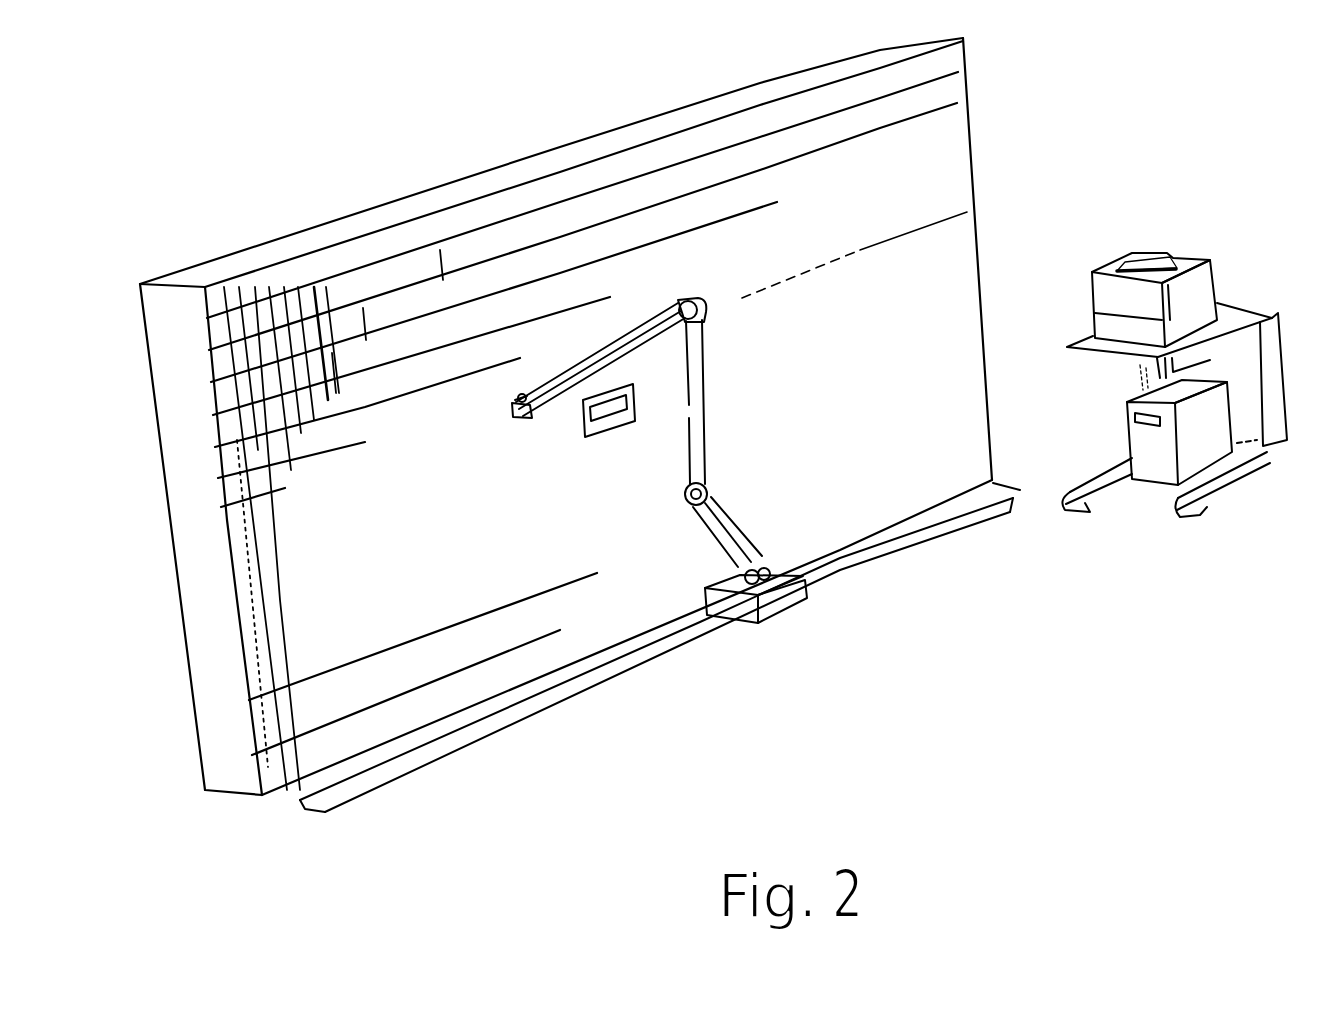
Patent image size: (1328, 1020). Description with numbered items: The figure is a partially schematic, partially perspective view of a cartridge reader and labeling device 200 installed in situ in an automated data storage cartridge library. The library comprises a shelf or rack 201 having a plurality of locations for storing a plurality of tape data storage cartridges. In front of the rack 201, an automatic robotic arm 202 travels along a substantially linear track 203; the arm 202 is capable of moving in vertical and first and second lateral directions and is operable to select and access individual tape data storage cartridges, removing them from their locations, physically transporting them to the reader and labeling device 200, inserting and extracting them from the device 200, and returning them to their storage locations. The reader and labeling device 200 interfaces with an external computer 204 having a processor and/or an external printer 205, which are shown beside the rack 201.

The cartridge reader and labeling device 200 is at (626, 436).
The shelf or rack 201 is at (981, 271).
The automatic robotic arm 202 is at (705, 385).
The substantially linear track 203 is at (955, 524).
The external computer 204 is at (1138, 477).
The external printer 205 is at (1217, 287).